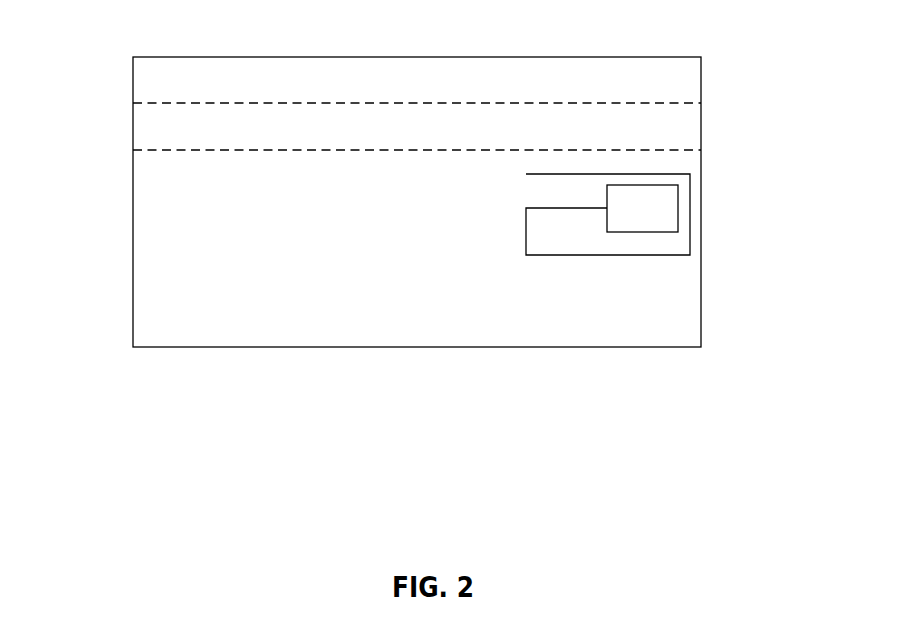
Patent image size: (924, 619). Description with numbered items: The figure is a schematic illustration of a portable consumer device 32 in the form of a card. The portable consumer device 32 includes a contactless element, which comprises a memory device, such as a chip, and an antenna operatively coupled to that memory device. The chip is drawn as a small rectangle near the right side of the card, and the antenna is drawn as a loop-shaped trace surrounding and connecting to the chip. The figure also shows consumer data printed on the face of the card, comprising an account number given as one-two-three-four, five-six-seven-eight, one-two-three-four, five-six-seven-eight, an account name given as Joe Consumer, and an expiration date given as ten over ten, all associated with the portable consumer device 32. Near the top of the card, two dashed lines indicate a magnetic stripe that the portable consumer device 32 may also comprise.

The portable consumer device 32 is at (133, 203).